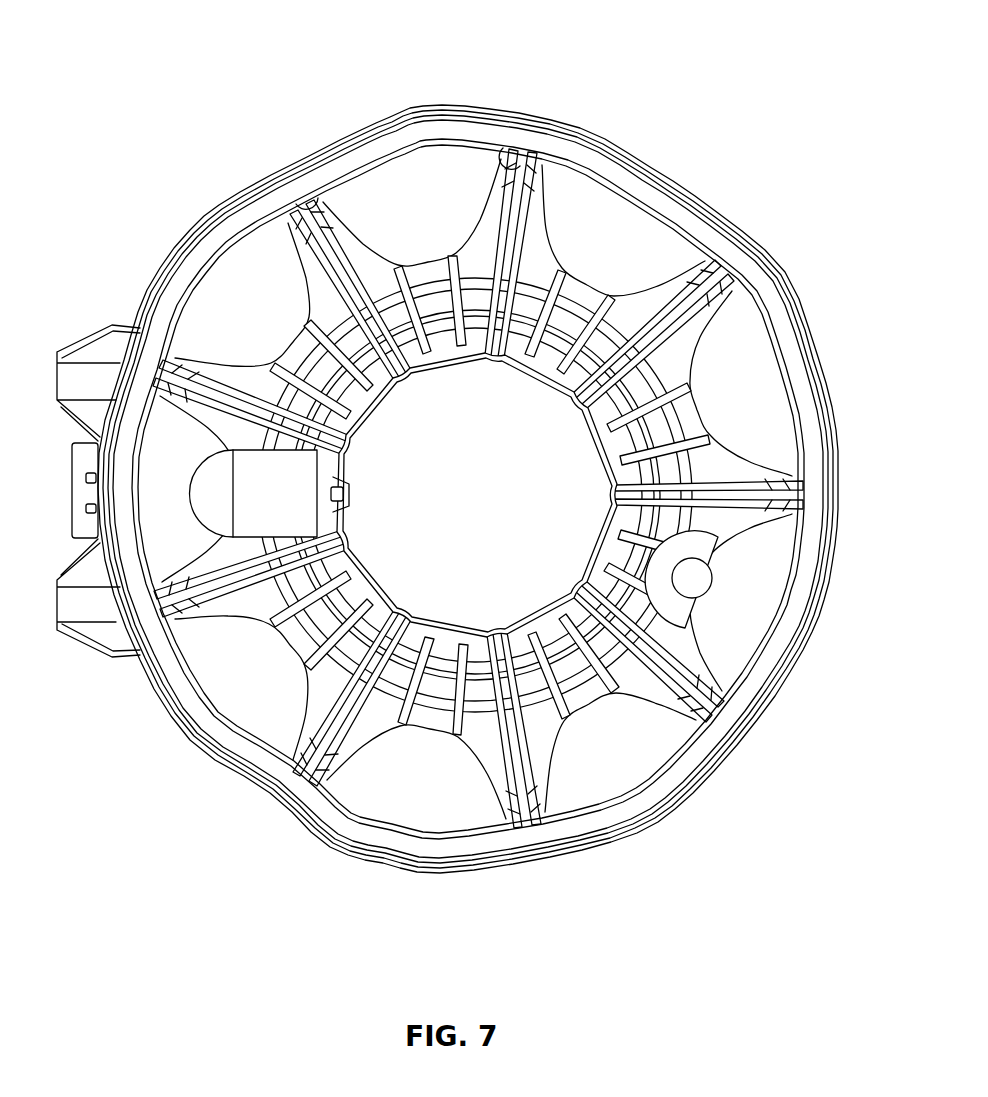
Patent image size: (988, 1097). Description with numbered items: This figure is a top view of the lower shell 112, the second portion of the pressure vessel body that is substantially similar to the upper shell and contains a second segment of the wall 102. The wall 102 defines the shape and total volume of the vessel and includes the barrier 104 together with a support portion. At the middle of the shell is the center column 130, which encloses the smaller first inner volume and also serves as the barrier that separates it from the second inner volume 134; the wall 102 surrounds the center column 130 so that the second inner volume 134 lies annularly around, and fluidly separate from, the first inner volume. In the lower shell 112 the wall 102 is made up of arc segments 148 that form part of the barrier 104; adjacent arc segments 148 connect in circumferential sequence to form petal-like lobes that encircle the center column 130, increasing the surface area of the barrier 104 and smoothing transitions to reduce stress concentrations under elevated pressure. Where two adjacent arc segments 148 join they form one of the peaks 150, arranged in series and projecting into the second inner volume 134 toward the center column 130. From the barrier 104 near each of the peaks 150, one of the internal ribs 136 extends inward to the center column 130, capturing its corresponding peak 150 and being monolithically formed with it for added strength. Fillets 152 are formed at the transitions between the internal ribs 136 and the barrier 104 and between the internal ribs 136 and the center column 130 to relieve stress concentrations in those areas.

The lower shell 112 is at (104, 34).
The wall 102 is at (770, 400).
The barrier 104 is at (658, 242).
The center column 130 is at (300, 350).
The second inner volume 134 is at (232, 700).
The internal ribs 136 is at (345, 255).
The arc segments 148 is at (440, 173).
The peaks 150 is at (535, 182).
The fillets 152 is at (312, 782).